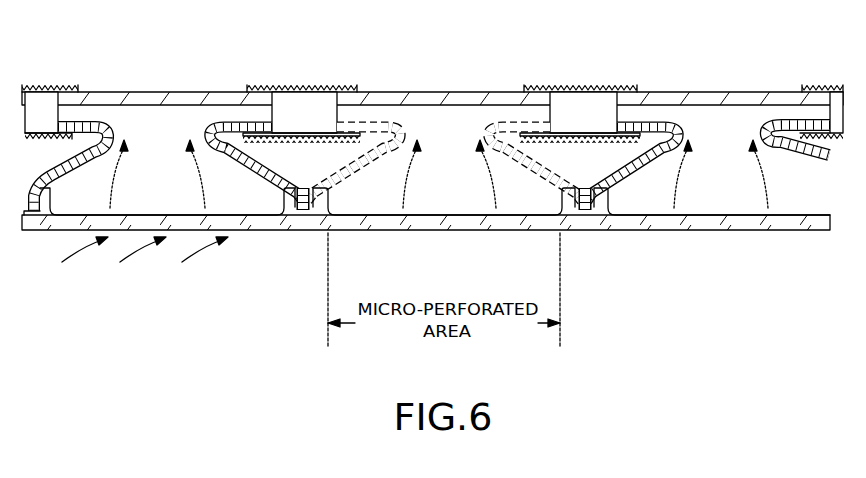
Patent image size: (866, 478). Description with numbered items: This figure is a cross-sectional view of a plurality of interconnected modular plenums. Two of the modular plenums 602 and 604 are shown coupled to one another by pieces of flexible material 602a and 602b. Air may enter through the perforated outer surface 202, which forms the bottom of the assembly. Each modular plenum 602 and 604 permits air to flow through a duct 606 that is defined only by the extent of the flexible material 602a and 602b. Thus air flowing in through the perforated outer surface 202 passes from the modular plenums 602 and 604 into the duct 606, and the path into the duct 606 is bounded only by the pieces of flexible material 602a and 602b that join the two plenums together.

The perforated outer surface 202 is at (173, 231).
The modular plenum 602 is at (170, 191).
The flexible material 602a is at (330, 73).
The second flow director element 602b is at (582, 73).
The modular plenum 604 is at (462, 190).
The duct 606 is at (170, 135).